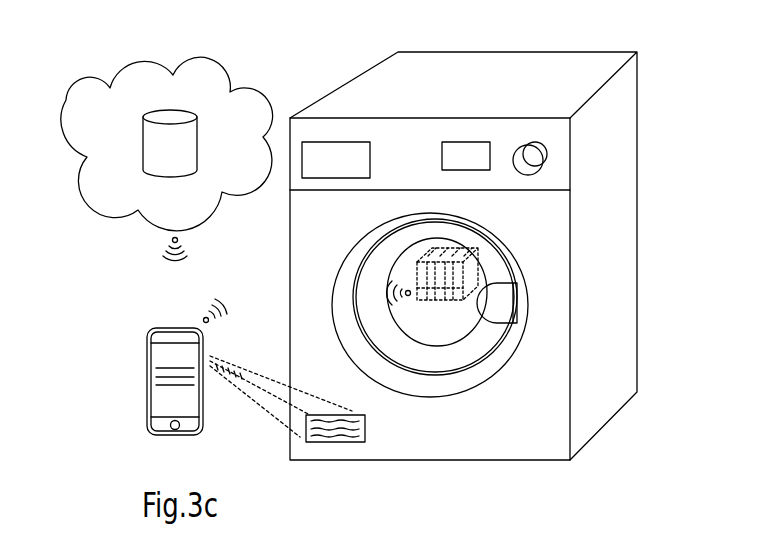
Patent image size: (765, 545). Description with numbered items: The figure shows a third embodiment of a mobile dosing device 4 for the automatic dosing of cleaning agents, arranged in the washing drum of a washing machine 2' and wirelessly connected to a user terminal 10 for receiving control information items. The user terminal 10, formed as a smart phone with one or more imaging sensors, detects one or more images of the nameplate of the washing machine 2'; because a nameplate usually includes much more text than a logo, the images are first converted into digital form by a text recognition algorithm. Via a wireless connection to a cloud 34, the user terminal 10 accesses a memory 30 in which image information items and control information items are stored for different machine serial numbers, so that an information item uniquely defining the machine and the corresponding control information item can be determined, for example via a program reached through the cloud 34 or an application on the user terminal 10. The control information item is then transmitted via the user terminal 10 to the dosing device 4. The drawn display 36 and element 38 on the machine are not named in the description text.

The cloud 34 is at (200, 62).
The memory 30 is at (183, 158).
The user terminal 10 is at (143, 392).
The washing machine 2' is at (485, 256).
The display / user interface 36 is at (358, 148).
The mobile dosing device 4 is at (440, 300).
The communication module / label 38 is at (338, 444).